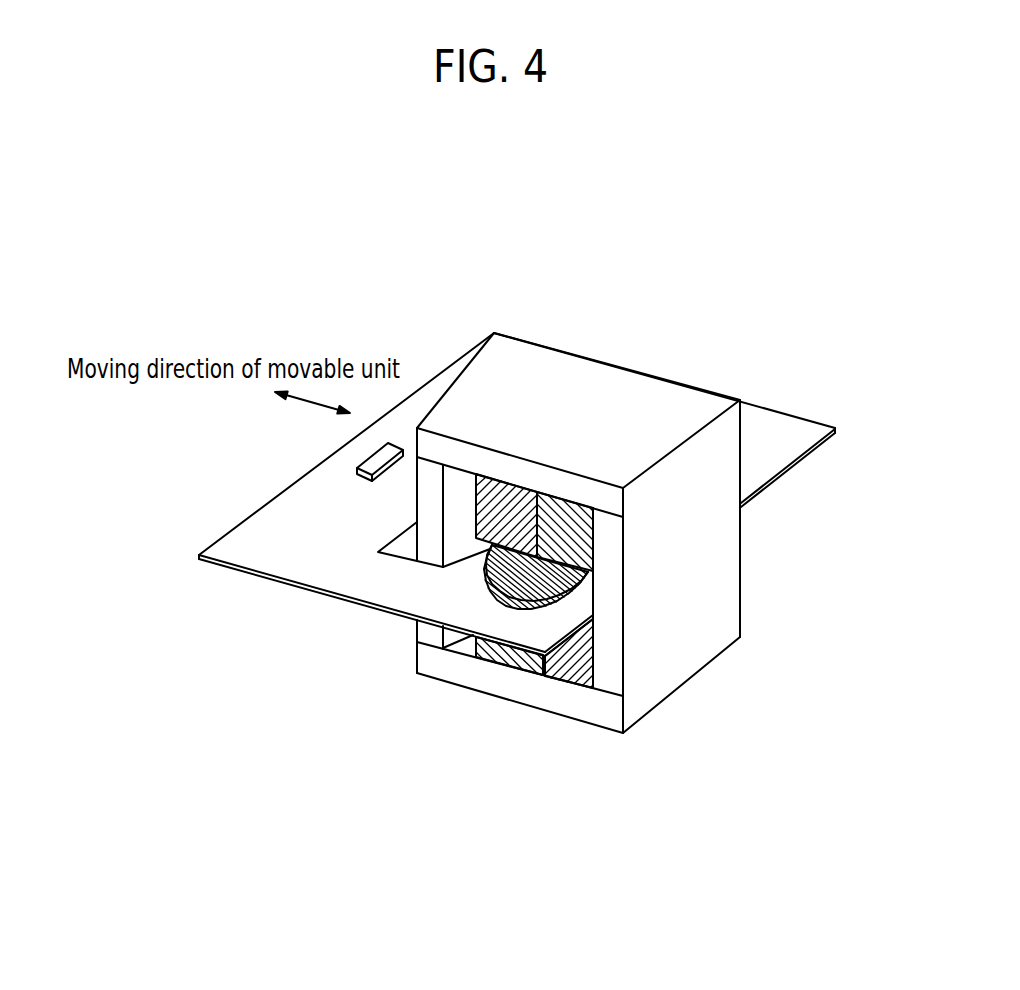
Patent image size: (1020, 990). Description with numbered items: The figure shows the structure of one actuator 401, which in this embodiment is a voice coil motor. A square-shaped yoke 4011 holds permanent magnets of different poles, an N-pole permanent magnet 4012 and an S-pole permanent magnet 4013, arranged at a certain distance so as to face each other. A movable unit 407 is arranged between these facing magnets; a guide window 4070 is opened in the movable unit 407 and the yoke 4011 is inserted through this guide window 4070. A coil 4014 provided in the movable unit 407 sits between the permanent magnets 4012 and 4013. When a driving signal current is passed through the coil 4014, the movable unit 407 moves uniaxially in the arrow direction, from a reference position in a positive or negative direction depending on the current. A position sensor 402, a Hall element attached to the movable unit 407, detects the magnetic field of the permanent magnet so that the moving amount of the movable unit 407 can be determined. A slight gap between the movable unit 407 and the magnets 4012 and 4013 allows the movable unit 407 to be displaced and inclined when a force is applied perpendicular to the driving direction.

The actuator 401 is at (614, 464).
The yoke 4011 is at (543, 362).
The N-pole permanent magnet 4012 is at (593, 617).
The S-pole permanent magnet 4013 is at (559, 530).
The coil 4014 is at (488, 570).
The movable unit 407 is at (472, 347).
The guide window 4070 is at (378, 552).
The position sensor 402 is at (378, 459).